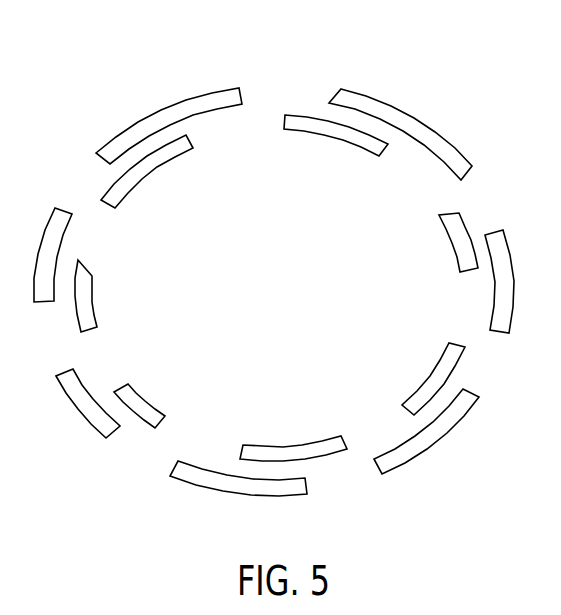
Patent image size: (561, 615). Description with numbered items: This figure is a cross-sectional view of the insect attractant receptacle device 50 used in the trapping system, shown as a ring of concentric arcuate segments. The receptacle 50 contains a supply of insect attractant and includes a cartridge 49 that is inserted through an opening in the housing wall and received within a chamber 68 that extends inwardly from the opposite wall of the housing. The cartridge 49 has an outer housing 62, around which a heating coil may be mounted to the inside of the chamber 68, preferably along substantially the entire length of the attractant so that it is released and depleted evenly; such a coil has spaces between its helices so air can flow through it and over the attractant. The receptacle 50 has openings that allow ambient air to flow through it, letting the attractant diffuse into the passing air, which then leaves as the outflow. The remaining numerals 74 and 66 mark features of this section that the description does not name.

The insect attractant receptacle device 50 is at (377, 83).
The chamber 68 is at (429, 127).
The inner arcuate segment 74 is at (291, 91).
The outer housing 62 is at (115, 184).
The gap between segments 66 is at (439, 197).
The cartridge 49 is at (329, 455).